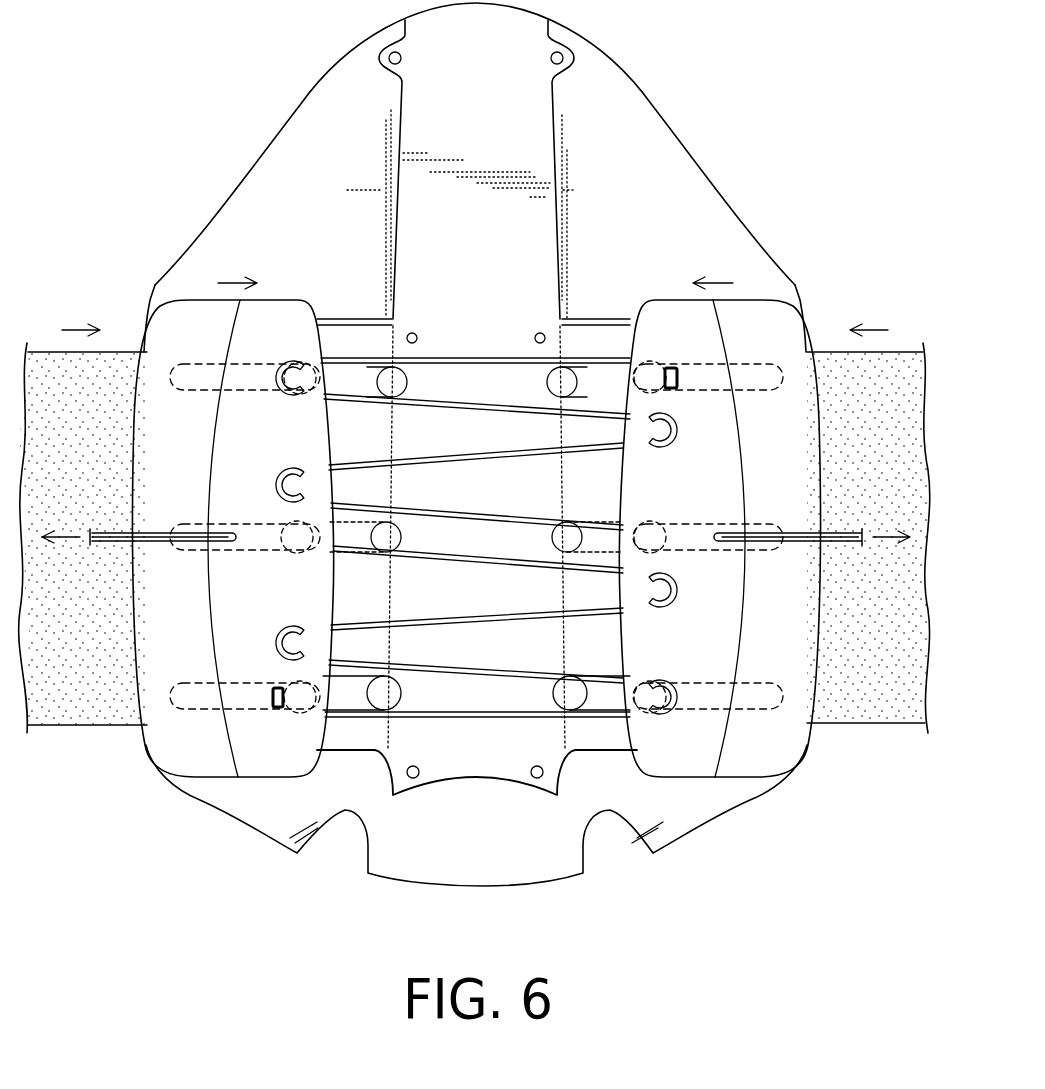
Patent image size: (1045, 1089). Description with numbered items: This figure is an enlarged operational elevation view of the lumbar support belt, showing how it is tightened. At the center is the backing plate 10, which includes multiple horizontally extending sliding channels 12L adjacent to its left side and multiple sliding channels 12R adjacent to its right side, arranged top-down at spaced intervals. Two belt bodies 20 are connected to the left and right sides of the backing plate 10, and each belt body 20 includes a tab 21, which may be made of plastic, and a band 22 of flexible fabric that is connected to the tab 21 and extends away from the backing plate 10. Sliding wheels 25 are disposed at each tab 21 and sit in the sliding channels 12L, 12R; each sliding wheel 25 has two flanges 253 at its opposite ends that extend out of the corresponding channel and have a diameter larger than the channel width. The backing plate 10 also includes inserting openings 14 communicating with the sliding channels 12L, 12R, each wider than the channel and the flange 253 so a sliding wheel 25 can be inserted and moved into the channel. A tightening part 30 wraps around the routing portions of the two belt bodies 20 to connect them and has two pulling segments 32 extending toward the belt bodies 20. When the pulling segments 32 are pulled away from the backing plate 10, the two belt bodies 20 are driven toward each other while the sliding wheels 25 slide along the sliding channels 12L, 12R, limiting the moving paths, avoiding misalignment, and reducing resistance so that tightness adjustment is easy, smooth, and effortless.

The backing plate 10 is at (706, 100).
The belt body 20 is at (738, 541).
The tab 21 is at (775, 757).
The band 22 is at (853, 707).
The sliding wheel 25 is at (690, 572).
The flange 253 is at (647, 528).
The tightening part 30 is at (459, 340).
The inserting opening 14 is at (398, 384).
The sliding channel 12L is at (362, 695).
The sliding channel 12R is at (570, 690).
The pulling segment 32 is at (117, 533).